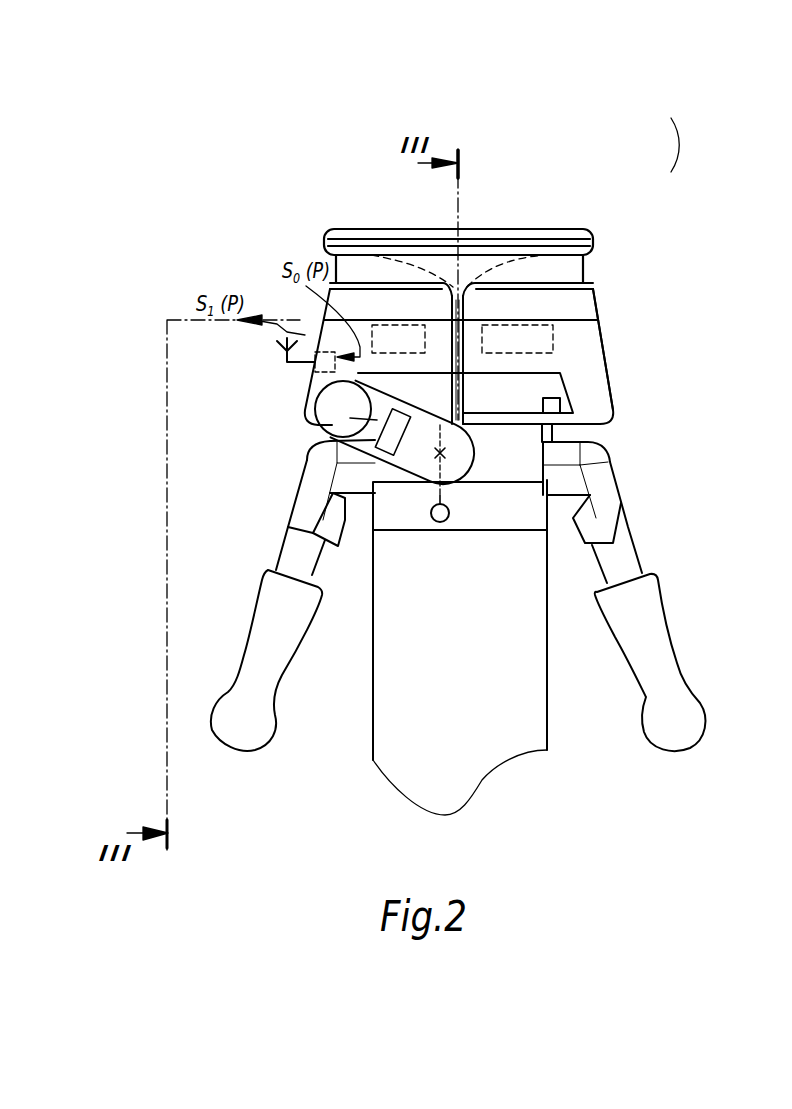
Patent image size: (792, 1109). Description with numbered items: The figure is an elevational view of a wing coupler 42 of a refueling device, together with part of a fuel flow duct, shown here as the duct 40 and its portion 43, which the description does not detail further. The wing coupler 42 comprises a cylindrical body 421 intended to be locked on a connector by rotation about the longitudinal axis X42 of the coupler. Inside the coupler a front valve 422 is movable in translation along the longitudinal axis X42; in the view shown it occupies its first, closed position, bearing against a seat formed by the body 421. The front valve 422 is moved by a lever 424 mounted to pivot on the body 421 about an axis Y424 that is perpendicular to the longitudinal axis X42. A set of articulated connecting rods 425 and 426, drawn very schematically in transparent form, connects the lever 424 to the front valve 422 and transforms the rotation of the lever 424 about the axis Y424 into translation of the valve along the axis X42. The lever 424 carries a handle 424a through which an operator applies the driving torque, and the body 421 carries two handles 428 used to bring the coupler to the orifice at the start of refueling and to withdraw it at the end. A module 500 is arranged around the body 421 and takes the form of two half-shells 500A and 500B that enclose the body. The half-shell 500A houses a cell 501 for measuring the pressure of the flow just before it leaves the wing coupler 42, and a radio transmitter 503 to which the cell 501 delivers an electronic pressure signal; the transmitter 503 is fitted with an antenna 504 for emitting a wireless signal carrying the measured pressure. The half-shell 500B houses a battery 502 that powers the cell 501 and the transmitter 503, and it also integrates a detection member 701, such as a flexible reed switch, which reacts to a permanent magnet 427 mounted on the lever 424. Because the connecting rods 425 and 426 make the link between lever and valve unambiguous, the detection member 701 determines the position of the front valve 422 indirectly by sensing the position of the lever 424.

The robot body 40 is at (550, 718).
The wing coupler 42 is at (617, 375).
The torso block 43 is at (525, 556).
The cylindrical body 421 is at (520, 456).
The front valve 422 is at (397, 240).
The lever 424 is at (417, 458).
The handle 424a is at (332, 408).
The connecting rod 425 is at (437, 477).
The connecting rod 426 is at (473, 445).
The permanent magnet 427 is at (347, 421).
The handles 428 is at (275, 625).
The module 500 is at (698, 145).
The half-shell 500A is at (395, 300).
The half-shell 500B is at (533, 340).
The cell 501 is at (383, 340).
The battery 502 is at (590, 240).
The radio transmitter 503 is at (312, 368).
The antenna 504 is at (275, 345).
The detection member 701 is at (550, 408).
The longitudinal axis X42 is at (475, 145).
The pivot axis Y424 is at (468, 477).